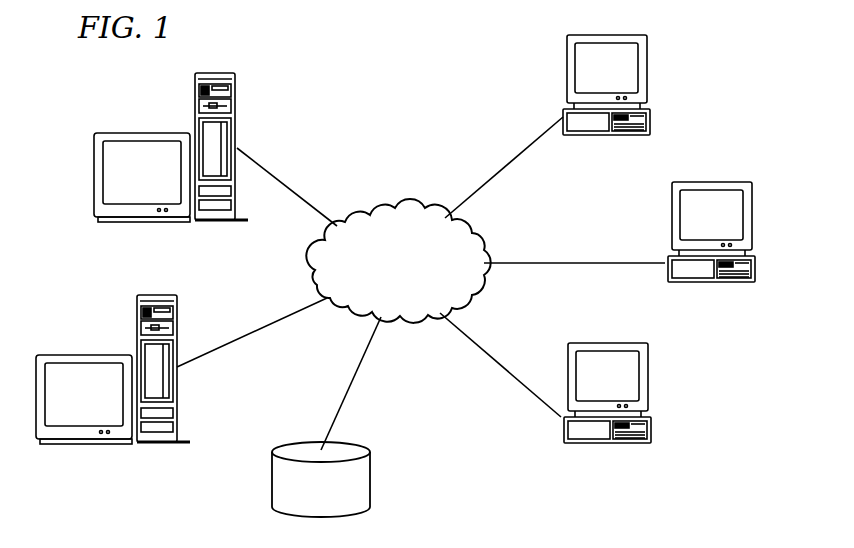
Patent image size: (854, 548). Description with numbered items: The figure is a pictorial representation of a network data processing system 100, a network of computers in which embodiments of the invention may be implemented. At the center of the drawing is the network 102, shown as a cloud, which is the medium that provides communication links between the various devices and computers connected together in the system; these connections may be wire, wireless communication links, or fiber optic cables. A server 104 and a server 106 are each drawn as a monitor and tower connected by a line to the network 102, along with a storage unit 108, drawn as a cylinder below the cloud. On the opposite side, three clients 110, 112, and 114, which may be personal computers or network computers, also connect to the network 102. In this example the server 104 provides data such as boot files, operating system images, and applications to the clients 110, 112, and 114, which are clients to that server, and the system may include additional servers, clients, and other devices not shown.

The network data processing system 100 is at (317, 75).
The network 102 is at (385, 290).
The server 104 is at (138, 316).
The server 106 is at (196, 94).
The storage unit 108 is at (272, 480).
The client 110 is at (647, 78).
The client 112 is at (751, 221).
The client 114 is at (648, 380).